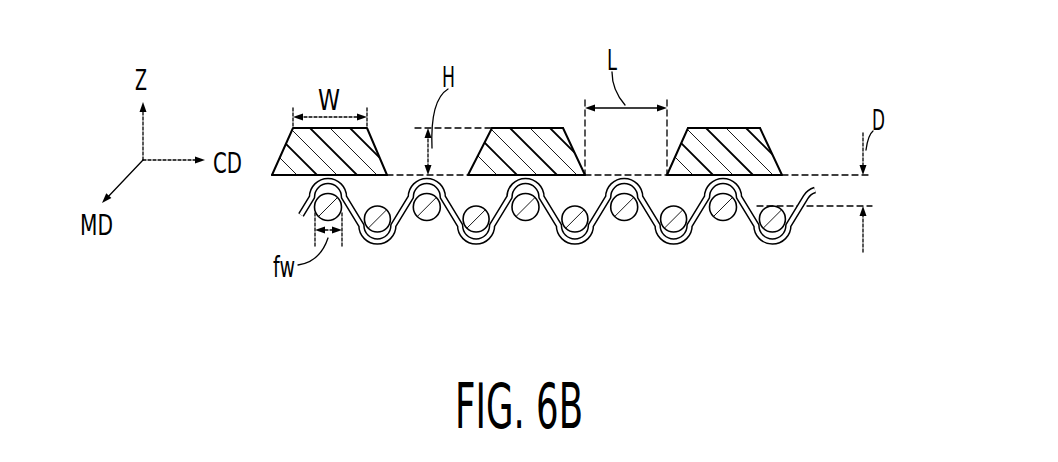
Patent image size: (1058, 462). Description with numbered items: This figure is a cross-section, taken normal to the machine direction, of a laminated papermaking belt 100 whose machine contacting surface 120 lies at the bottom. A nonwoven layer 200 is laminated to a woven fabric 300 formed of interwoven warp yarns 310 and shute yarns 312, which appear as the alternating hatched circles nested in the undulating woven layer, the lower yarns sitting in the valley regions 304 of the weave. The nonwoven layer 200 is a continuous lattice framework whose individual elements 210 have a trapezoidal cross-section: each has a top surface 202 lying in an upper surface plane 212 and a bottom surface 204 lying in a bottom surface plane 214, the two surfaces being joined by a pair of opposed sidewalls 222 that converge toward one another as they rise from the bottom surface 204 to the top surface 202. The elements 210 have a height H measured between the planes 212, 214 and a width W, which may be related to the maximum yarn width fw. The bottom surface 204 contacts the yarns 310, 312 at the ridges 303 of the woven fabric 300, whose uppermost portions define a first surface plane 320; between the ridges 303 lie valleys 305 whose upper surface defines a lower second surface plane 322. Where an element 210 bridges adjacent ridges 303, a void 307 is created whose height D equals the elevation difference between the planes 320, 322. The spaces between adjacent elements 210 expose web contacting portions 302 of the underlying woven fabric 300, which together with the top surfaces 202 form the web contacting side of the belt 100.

The laminated belt 100 is at (250, 48).
The machine contacting surface 120 is at (760, 313).
The nonwoven layer 200 is at (717, 120).
The upper surface 202 is at (754, 127).
The bottom surface 204 is at (280, 183).
The element 210 is at (574, 194).
The upper surface plane 212 is at (472, 128).
The bottom surface plane 214 is at (457, 228).
The sidewall 222 is at (393, 160).
The woven fabric 300 is at (377, 258).
The web contacting portion 302 is at (402, 165).
The ridge 303 is at (637, 168).
The valley of corrugation 304 is at (423, 236).
The valley 305 is at (552, 233).
The void 307 is at (589, 185).
The warp yarn 310 is at (658, 246).
The shute yarn 312 is at (725, 222).
The first surface plane 320 is at (842, 175).
The second surface plane 322 is at (843, 207).